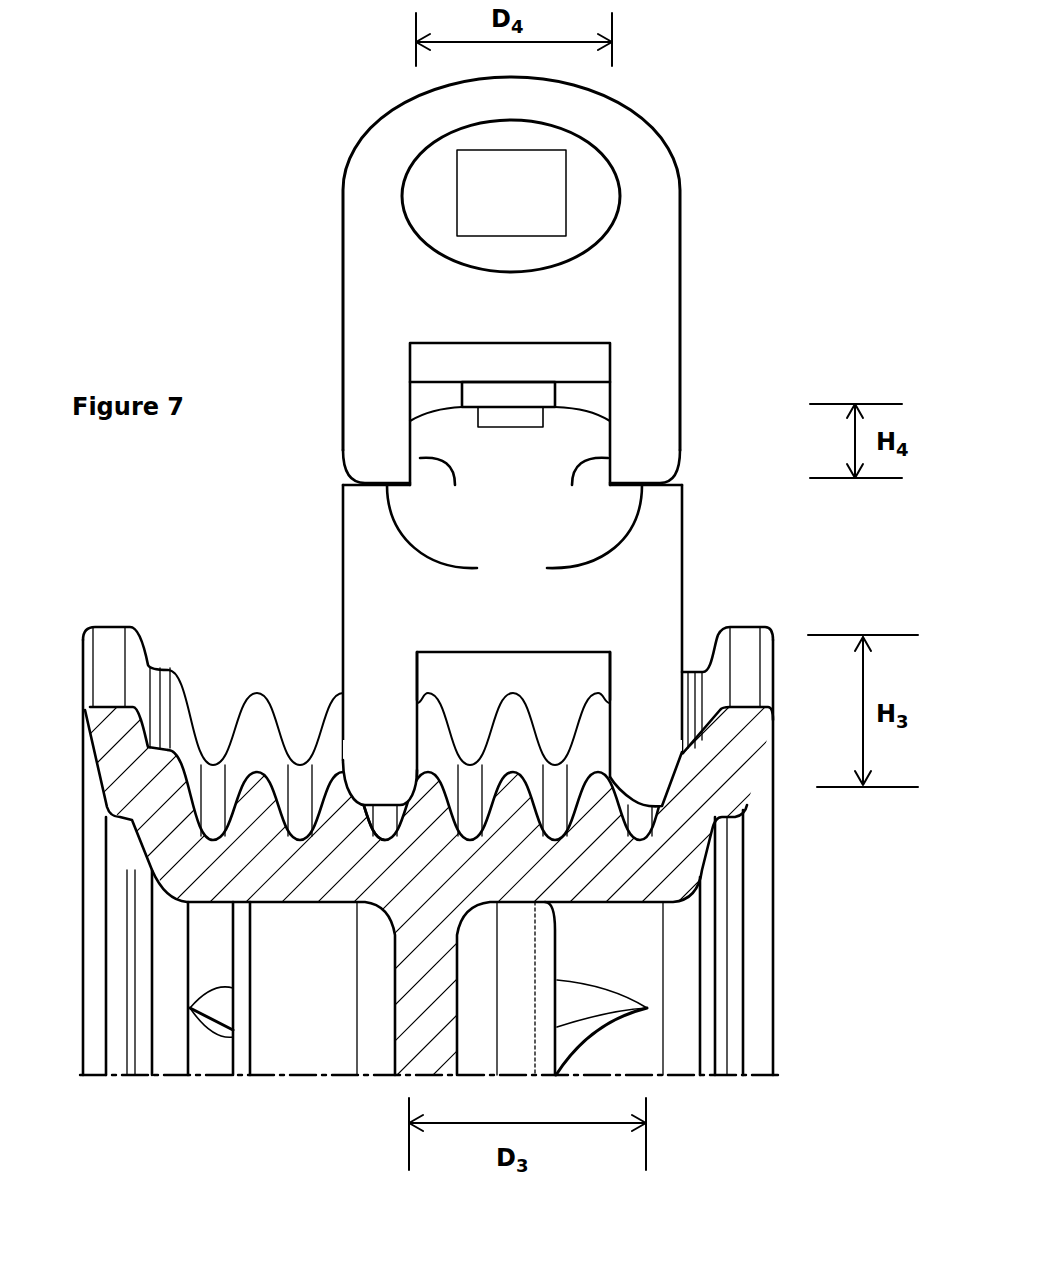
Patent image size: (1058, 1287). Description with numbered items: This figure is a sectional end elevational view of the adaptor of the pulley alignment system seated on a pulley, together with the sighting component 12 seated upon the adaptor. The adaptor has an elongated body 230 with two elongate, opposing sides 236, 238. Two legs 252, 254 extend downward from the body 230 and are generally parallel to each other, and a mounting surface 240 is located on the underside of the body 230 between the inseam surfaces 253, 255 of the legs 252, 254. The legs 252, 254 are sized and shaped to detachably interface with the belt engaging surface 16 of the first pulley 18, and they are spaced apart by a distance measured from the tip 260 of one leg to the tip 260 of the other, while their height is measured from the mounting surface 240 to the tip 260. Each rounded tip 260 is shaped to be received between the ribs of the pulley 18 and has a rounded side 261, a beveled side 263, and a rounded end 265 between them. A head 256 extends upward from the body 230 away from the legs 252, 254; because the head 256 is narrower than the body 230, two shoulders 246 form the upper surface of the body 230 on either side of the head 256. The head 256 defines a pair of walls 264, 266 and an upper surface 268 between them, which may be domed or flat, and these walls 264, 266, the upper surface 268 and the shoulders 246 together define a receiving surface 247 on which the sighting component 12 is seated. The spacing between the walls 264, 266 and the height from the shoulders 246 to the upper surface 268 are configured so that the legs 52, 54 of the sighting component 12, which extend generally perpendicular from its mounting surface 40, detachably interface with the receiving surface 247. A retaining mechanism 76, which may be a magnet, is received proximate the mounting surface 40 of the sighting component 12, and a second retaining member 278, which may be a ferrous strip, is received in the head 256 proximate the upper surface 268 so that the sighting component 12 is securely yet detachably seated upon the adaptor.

The sighting component 12 is at (682, 175).
The retaining mechanism 76 is at (512, 395).
The mounting surface 40 is at (575, 383).
The leg 52 is at (663, 405).
The leg 54 is at (353, 422).
The upper surface 268 is at (564, 407).
The head 256 is at (455, 440).
The second retaining member 278 is at (510, 420).
The receiving surface 247 is at (678, 478).
The elongated body 230 is at (362, 532).
The wall 266 is at (451, 492).
The wall 264 is at (576, 492).
The shoulders 246 is at (514, 533).
The side 238 is at (337, 578).
The side 236 is at (682, 560).
The mounting surface 240 is at (512, 652).
The inseam surface 255 is at (417, 672).
The inseam surface 253 is at (610, 672).
The leg 254 is at (372, 720).
The leg 252 is at (658, 720).
The belt engaging surface 16 is at (152, 802).
The beveled side 263 is at (350, 777).
The rounded end 265 is at (380, 807).
The rounded side 261 is at (412, 792).
The rounded tip 260 is at (645, 803).
The first pulley 18 is at (763, 945).